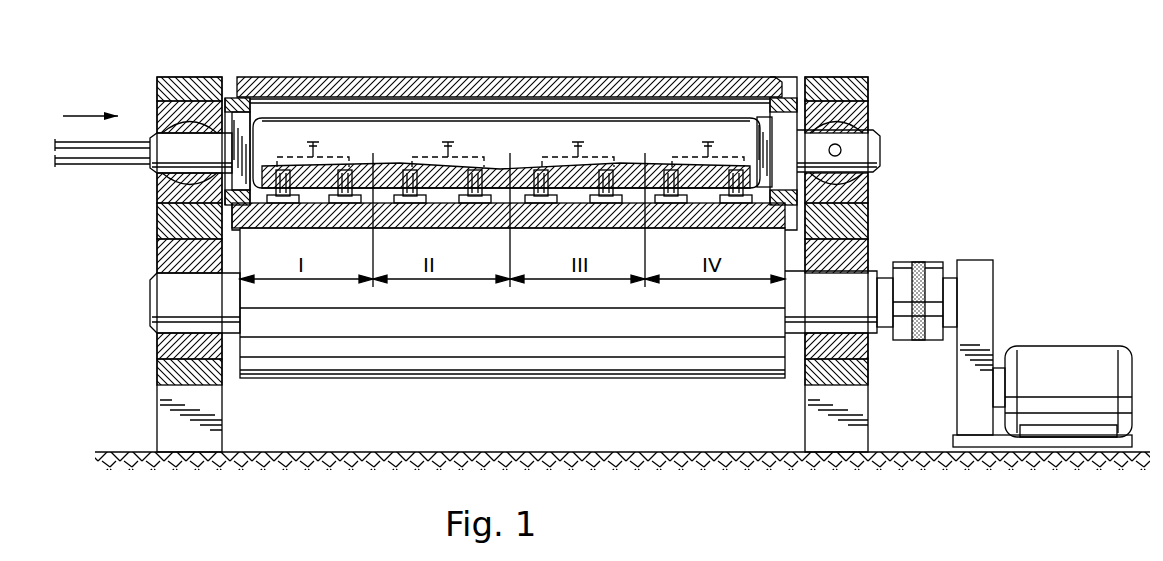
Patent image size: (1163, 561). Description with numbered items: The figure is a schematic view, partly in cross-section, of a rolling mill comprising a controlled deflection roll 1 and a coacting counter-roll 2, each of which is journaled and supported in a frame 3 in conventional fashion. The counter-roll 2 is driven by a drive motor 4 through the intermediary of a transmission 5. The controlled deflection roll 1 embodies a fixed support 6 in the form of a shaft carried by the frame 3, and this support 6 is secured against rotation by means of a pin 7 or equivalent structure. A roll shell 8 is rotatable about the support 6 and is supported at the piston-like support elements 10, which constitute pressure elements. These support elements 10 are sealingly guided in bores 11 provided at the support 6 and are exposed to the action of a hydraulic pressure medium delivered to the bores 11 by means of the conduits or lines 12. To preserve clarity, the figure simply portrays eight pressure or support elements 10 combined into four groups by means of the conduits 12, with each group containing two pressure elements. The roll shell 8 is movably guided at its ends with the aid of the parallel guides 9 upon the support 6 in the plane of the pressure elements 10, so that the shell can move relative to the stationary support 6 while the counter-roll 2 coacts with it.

The controlled deflection roll 1 is at (553, 62).
The counter-roll 2 is at (545, 362).
The frame 3 is at (157, 222).
The drive motor 4 is at (1058, 354).
The transmission 5 is at (983, 292).
The fixed support 6 is at (347, 130).
The pin 7 is at (843, 150).
The roll shell 8 is at (428, 83).
The parallel guides 9 is at (233, 97).
The support elements 10 is at (531, 208).
The bores 11 is at (473, 208).
The conduits 12 is at (439, 160).